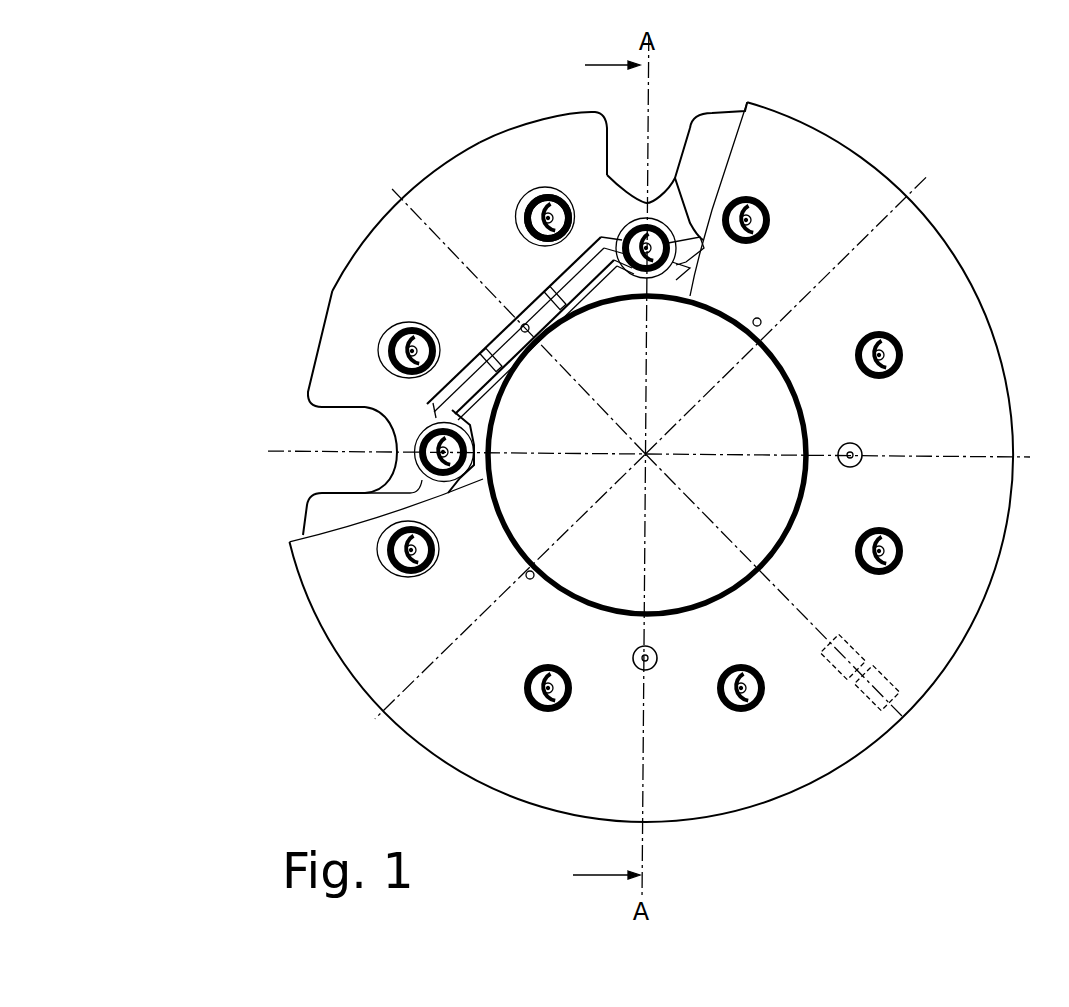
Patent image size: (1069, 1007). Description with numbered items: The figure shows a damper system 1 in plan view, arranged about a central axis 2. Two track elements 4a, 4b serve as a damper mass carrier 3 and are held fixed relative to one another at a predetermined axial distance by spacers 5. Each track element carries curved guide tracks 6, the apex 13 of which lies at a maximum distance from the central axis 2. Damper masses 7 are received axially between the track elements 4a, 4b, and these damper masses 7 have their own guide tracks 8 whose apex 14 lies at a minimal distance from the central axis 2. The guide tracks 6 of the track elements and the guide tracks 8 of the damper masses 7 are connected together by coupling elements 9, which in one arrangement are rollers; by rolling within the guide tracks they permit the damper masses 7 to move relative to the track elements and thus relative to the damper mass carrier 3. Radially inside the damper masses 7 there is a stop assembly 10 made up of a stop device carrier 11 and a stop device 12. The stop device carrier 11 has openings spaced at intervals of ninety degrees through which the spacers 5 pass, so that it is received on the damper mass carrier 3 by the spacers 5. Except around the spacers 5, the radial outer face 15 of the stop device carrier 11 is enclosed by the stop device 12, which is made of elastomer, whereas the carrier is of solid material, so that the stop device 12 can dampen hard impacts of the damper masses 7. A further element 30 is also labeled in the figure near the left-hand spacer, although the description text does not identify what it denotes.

The damper system 1 is at (898, 137).
The central axis 2 is at (668, 462).
The damper mass carrier 3 is at (332, 555).
The track element 4a is at (712, 212).
The track element 4b is at (818, 148).
The spacer 5 is at (606, 200).
The guide track 6 is at (900, 377).
The damper mass 7 is at (470, 165).
The guide track 8 is at (538, 192).
The coupling element 9 is at (520, 215).
The stop assembly 10 is at (413, 433).
The stop device carrier 11 is at (425, 408).
The stop device 12 is at (428, 410).
The apex 13 is at (905, 330).
The apex 14 is at (460, 363).
The radial outer face 15 is at (676, 200).
The clamp bolt 30 is at (395, 462).